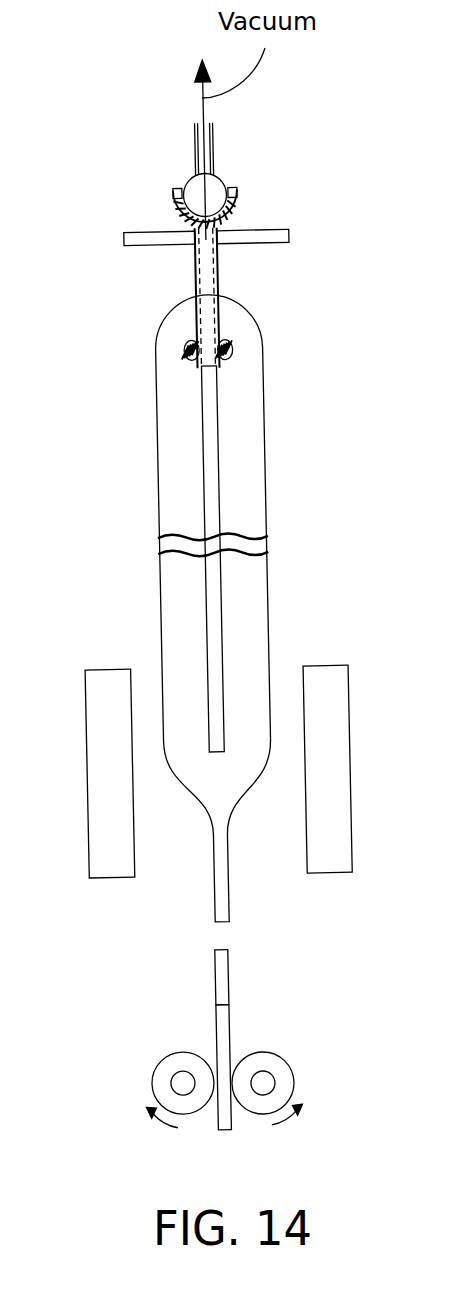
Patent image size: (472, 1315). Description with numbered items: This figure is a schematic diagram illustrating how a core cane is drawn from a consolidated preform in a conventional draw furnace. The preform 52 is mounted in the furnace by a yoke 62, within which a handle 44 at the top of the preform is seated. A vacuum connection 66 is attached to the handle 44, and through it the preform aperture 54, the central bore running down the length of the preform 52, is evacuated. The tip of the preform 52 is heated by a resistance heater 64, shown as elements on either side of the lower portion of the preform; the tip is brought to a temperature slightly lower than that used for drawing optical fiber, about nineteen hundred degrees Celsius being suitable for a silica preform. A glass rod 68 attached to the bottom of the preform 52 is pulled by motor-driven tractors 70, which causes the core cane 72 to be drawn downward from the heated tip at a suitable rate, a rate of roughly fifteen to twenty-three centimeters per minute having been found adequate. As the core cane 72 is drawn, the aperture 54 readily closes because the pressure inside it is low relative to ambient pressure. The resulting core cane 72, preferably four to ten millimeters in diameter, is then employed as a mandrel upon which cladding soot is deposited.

The handle 44 is at (180, 210).
The preform 52 is at (158, 595).
The preform aperture 54 is at (210, 462).
The yoke 62 is at (252, 245).
The resistance heater 64 is at (83, 740).
The vacuum connection 66 is at (208, 147).
The glass rod 68 is at (217, 1023).
The motor-driven tractors 70 is at (163, 1060).
The core cane 72 is at (228, 977).